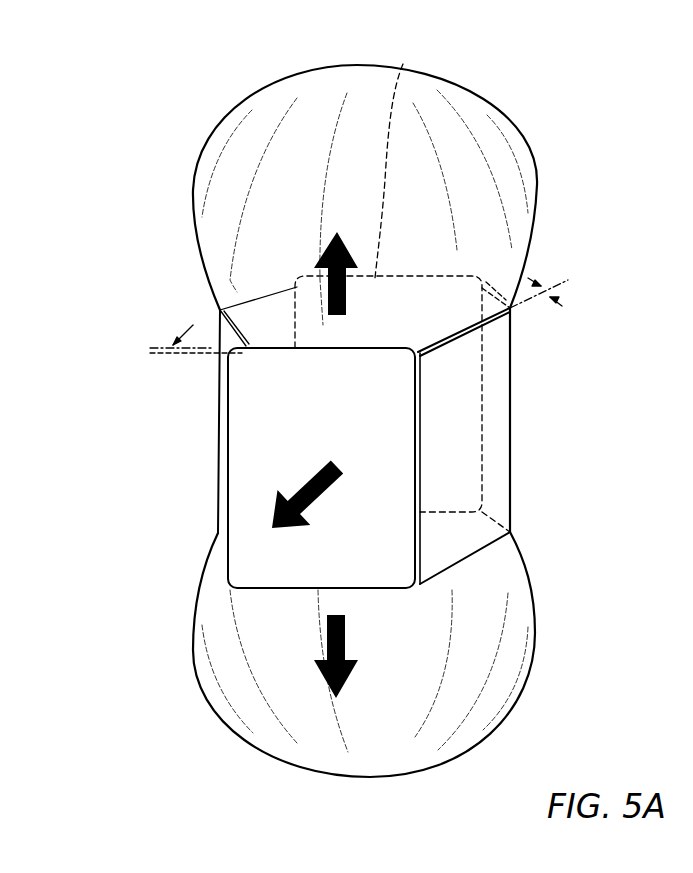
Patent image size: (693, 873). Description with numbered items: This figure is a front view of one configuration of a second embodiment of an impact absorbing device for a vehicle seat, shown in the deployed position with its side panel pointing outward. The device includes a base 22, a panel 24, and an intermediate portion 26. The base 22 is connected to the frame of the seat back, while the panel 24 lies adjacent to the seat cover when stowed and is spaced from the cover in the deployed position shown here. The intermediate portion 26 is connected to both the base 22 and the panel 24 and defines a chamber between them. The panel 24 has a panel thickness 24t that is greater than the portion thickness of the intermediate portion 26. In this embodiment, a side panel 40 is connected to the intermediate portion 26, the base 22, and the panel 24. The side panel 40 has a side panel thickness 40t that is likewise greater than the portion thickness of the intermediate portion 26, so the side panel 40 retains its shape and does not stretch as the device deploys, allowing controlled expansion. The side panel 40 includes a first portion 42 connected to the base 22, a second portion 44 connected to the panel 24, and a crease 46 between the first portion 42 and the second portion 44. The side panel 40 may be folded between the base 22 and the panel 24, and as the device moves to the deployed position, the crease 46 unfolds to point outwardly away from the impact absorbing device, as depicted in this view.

The base 22 is at (403, 64).
The panel 24 is at (213, 568).
The panel thickness 24t is at (163, 353).
The intermediate portion 26 is at (512, 127).
The side panel 40 is at (534, 387).
The side panel thickness 40t is at (563, 308).
The first portion 42 is at (494, 291).
The second portion 44 is at (463, 528).
The crease 46 is at (513, 427).